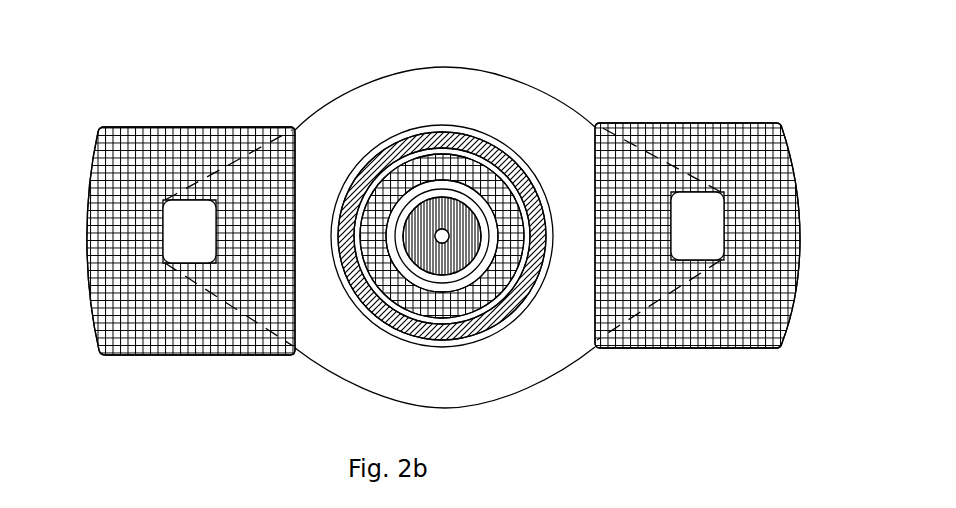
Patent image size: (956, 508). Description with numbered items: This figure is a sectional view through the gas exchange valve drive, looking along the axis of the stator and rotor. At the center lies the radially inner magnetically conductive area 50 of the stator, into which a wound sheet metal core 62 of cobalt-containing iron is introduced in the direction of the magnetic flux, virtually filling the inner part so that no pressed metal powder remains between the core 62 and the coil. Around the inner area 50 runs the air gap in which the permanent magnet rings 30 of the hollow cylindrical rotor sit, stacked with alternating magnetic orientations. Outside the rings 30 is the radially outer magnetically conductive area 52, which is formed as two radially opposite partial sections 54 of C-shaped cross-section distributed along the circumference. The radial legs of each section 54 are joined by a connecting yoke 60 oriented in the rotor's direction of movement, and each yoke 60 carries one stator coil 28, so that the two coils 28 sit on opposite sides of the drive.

The stator coil 28 is at (270, 157).
The permanent magnet rings 30 is at (477, 143).
The radially inner magnetically conductive area 50 is at (412, 195).
The radially outer magnetically conductive area 52 is at (412, 105).
The partial sections 54 is at (548, 165).
The connecting yoke 60 is at (197, 212).
The wound sheet metal core 62 is at (472, 232).